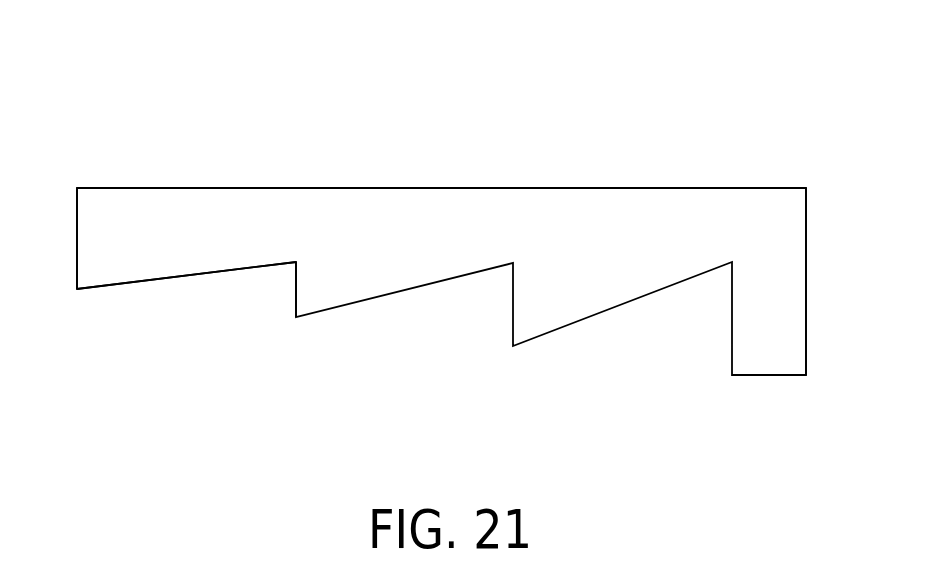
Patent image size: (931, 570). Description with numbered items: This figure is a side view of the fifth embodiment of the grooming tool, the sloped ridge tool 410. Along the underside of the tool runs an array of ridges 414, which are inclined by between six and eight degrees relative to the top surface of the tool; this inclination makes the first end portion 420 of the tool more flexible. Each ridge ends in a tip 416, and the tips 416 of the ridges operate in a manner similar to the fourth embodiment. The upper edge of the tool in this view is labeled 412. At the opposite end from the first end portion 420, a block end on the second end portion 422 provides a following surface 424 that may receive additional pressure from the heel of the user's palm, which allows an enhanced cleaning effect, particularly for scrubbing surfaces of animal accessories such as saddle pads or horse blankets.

The sloped ridge tool 410 is at (438, 105).
The top surface 412 is at (616, 188).
The array of ridges 414 is at (293, 298).
The tips of the ridges 416 is at (300, 318).
The first end portion 420 is at (175, 223).
The second end portion 422 is at (783, 233).
The following surface 424 is at (781, 377).